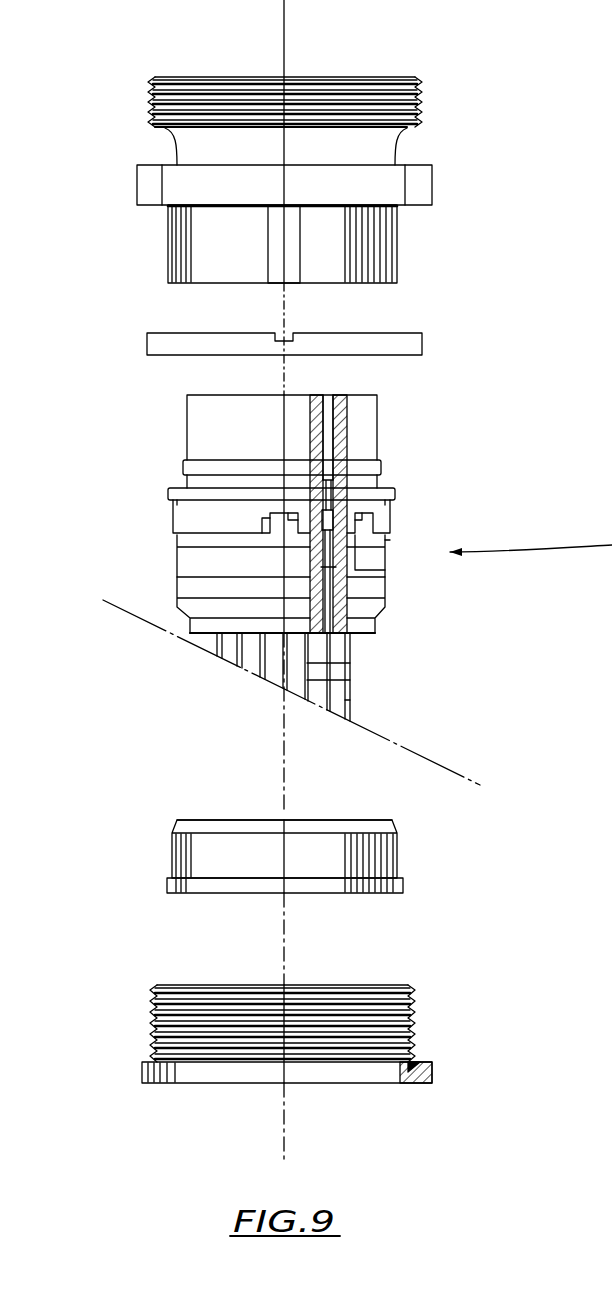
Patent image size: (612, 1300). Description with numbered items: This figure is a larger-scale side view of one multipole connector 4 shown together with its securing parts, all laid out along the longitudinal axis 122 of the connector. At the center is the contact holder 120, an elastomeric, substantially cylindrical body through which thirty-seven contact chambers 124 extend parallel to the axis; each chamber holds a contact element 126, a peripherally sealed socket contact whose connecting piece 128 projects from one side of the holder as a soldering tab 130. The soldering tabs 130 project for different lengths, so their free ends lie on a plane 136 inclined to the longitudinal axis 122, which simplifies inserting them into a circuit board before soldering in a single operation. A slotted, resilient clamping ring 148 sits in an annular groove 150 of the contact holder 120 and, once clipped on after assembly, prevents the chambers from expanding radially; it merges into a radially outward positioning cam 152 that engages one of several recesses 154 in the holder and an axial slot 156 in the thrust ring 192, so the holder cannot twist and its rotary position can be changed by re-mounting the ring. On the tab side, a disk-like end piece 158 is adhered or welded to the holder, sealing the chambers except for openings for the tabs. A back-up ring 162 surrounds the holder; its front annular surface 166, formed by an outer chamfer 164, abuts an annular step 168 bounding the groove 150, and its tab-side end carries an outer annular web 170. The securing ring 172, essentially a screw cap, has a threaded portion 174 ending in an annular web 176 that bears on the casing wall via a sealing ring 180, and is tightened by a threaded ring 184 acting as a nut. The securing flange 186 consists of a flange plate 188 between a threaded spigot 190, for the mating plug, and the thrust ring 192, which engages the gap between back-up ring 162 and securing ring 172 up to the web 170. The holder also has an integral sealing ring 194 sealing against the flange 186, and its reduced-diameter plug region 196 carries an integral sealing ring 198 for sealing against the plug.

The connector 4 is at (316, 553).
The contact holder 120 is at (175, 523).
The longitudinal axis 122 is at (285, 28).
The contact chambers 124 is at (327, 395).
The contact elements 126 is at (323, 422).
The connecting pieces 128 is at (360, 703).
The soldering tabs 130 is at (352, 680).
The plane 136 is at (420, 755).
The clamping ring 148 is at (385, 557).
The annular groove 150 is at (178, 548).
The positioning cam 152 is at (270, 520).
The recesses 154 is at (185, 510).
The axial slot 156 is at (292, 281).
The end piece 158 is at (185, 592).
The back-up ring 162 is at (284, 854).
The outer chamfer 164 is at (172, 823).
The front annular surface 166 is at (218, 820).
The annular step 168 is at (383, 547).
The outer annular web 170 is at (327, 886).
The securing ring 172 is at (318, 1040).
The threaded portion 174 is at (155, 1030).
The annular web 176 is at (372, 1075).
The sealing ring 180 is at (410, 1067).
The threaded ring 184 is at (160, 335).
The securing flange 186 is at (348, 199).
The flange plate 188 is at (393, 187).
The threaded spigot 190 is at (425, 104).
The thrust ring 192 is at (397, 248).
The sealing ring 194 is at (392, 490).
The plug region 196 is at (190, 420).
The sealing ring 198 is at (378, 462).